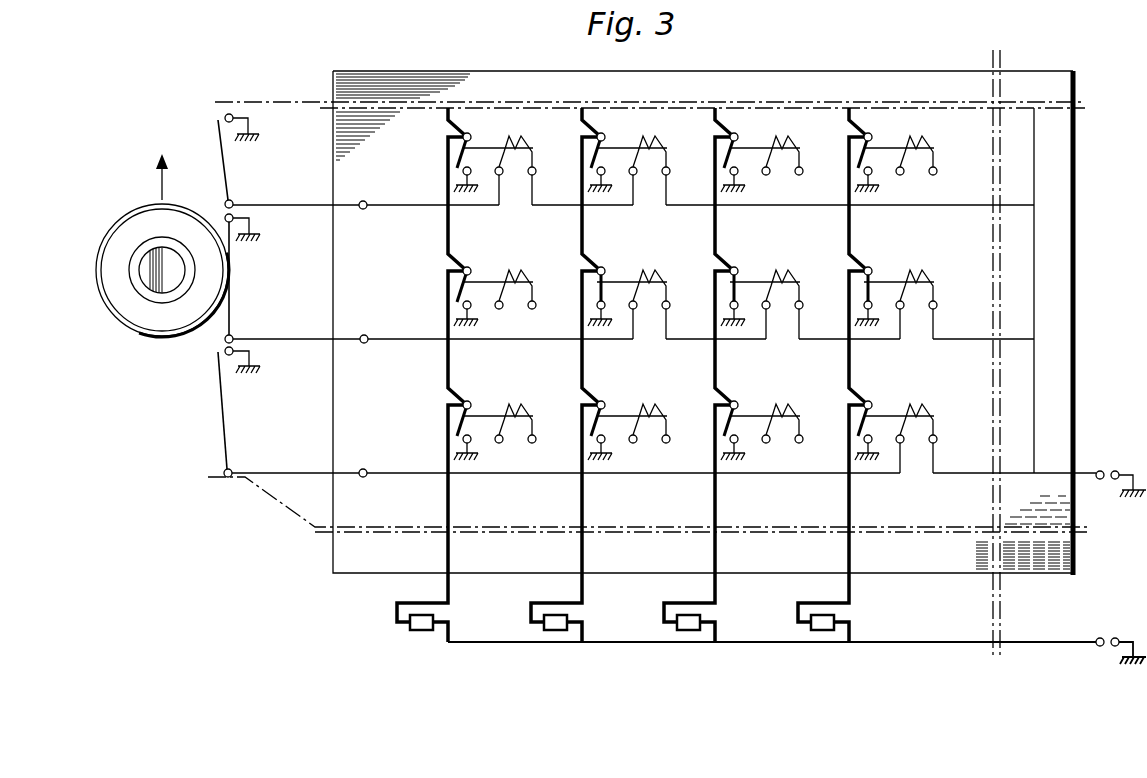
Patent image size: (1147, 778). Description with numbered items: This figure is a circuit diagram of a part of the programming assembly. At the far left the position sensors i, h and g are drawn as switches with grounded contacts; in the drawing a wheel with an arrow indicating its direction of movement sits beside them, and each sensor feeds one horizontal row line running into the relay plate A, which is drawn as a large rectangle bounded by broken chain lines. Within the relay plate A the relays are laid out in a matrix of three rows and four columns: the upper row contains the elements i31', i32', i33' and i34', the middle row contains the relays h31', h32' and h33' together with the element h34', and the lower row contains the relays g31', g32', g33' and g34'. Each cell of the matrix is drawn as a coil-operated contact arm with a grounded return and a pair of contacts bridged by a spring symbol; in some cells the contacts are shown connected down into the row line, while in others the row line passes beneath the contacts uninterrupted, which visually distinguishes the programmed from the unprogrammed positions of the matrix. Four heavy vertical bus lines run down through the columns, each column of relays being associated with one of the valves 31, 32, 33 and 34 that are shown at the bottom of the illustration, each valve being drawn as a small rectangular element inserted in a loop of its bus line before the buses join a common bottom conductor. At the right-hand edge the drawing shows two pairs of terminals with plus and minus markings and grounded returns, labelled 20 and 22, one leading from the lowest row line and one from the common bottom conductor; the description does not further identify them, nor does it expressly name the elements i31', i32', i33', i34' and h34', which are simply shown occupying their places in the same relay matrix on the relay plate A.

The relay plate A is at (647, 353).
The position sensor i is at (238, 161).
The position sensor h is at (242, 278).
The position sensor g is at (239, 412).
The valve 31 is at (418, 375).
The valve 32 is at (552, 375).
The valve 33 is at (685, 375).
The valve 34 is at (819, 375).
The voltage source terminal 20 is at (1120, 495).
The voltage source terminal 22 is at (797, 663).
The relay contact unit i31' is at (514, 169).
The relay contact unit i32' is at (648, 169).
The relay contact unit i33' is at (781, 167).
The relay contact unit i34' is at (915, 167).
The relay h31' is at (515, 301).
The relay h32' is at (649, 303).
The relay h33' is at (783, 303).
The relay contact unit h34' is at (918, 303).
The relay g31' is at (515, 435).
The relay g32' is at (649, 435).
The relay g33' is at (783, 435).
The relay g34' is at (918, 437).